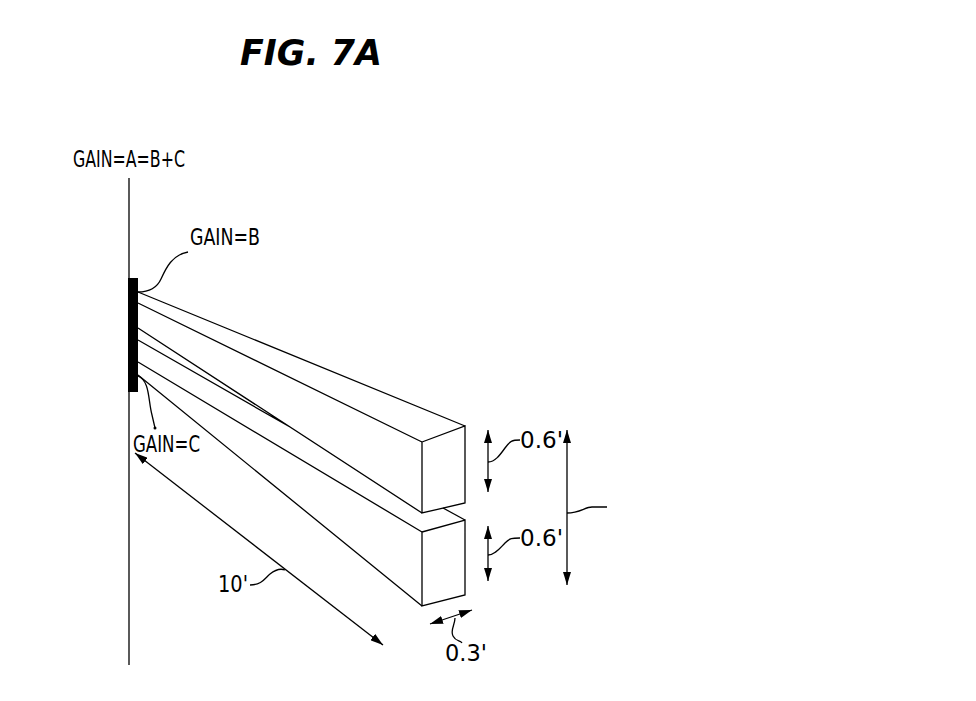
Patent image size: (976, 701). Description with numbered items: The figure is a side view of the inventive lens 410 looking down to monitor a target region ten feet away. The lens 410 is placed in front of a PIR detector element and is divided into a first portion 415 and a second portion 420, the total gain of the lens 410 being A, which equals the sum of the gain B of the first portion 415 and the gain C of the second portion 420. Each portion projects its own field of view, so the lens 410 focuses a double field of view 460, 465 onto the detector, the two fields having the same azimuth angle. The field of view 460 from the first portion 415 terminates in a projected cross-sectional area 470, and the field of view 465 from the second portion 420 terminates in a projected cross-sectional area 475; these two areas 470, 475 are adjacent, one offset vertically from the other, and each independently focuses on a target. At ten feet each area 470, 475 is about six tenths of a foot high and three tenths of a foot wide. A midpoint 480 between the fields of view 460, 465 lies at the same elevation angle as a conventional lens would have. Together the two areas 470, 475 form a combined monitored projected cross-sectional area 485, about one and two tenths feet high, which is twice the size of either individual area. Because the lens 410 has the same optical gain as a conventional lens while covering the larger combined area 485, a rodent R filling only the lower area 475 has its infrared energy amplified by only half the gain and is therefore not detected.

The inventive lens 410 is at (100, 343).
The first portion of the inventive lens 415 is at (128, 303).
The second portion of the inventive lens 420 is at (128, 378).
The field of view 460 is at (342, 402).
The field of view 465 is at (339, 490).
The projected cross-sectional area 470 is at (455, 437).
The projected cross-sectional area 475 is at (457, 588).
The midpoint between the fields of view 480 is at (443, 509).
The combined monitored projected cross-sectional area 485 is at (606, 431).